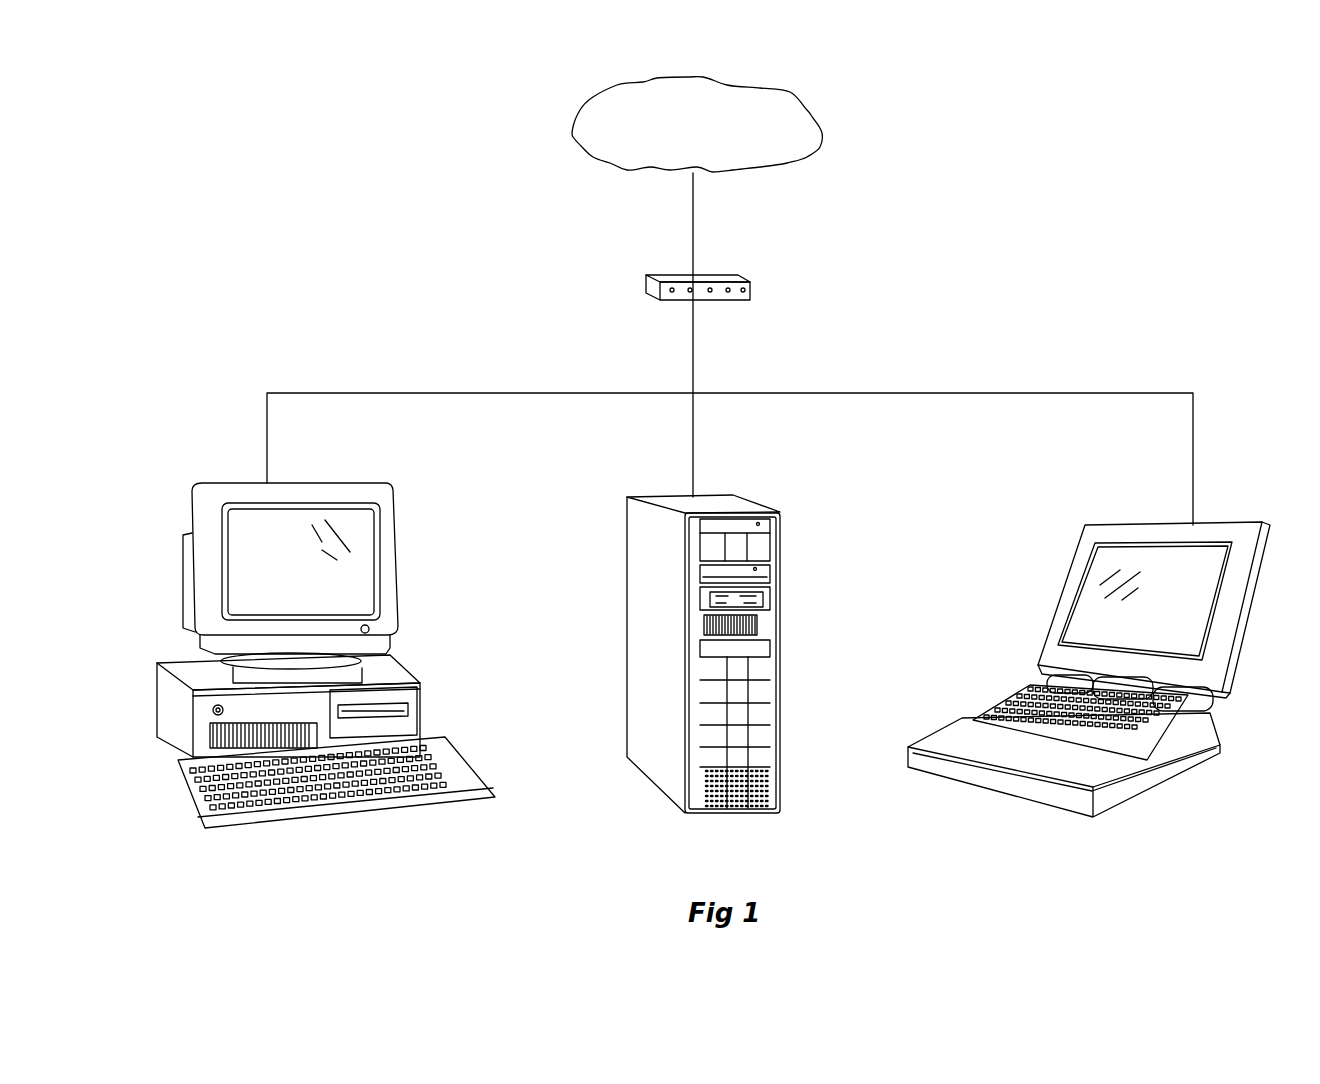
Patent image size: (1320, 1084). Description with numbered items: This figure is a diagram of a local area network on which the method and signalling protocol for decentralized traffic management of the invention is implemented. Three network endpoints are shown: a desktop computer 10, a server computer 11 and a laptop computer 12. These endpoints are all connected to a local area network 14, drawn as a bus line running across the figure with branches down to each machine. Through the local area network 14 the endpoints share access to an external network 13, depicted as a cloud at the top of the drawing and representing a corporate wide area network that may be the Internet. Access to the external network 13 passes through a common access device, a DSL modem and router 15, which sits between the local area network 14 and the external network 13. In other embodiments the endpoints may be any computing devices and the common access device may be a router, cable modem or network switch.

The desktop computer 10 is at (250, 481).
The server computer 11 is at (638, 497).
The laptop computer 12 is at (1118, 525).
The external network 13 is at (812, 124).
The local area network 14 is at (287, 392).
The DSL modem and router 15 is at (751, 294).